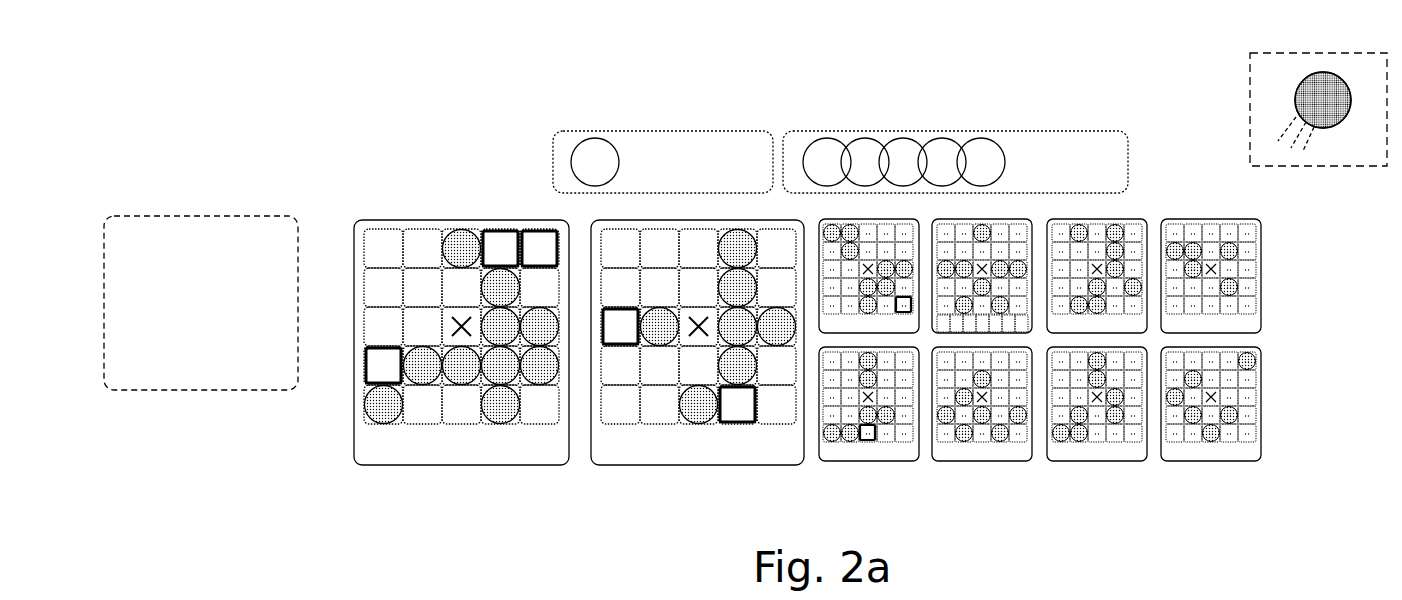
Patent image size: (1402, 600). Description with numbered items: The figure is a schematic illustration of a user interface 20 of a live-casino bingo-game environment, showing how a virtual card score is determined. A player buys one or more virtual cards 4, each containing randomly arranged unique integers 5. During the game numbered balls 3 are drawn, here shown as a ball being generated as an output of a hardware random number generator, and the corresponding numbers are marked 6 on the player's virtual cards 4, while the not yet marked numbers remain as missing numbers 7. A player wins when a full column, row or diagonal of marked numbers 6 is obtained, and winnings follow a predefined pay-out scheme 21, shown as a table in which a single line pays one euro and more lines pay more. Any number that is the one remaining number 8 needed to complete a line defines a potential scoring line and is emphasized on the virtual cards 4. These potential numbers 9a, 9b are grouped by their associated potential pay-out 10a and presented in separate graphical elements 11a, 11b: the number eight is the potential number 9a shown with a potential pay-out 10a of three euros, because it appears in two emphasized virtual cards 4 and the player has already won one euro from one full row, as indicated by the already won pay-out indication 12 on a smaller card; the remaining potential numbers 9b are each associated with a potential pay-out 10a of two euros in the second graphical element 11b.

The numbered ball 3 is at (1349, 145).
The virtual card 4 is at (475, 465).
The randomly arranged unique integers 5 is at (413, 186).
The marked number 6 is at (457, 233).
The missing number 7 is at (373, 234).
The one remaining number 8 is at (500, 233).
The potential number 9a is at (595, 140).
The potential numbers 9b is at (1003, 128).
The potential pay-out 10a is at (724, 140).
The separate graphical element 11a is at (650, 131).
The separate graphical element 11b is at (1128, 167).
The already won pay-out indication 12 is at (978, 223).
The user interface 20 is at (276, 106).
The predefined pay-out scheme 21 is at (202, 216).